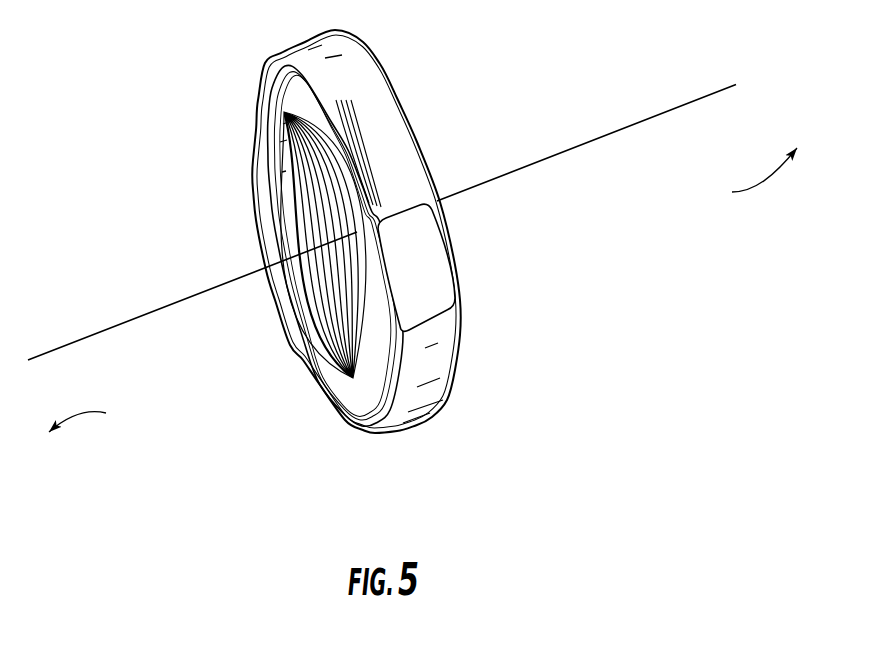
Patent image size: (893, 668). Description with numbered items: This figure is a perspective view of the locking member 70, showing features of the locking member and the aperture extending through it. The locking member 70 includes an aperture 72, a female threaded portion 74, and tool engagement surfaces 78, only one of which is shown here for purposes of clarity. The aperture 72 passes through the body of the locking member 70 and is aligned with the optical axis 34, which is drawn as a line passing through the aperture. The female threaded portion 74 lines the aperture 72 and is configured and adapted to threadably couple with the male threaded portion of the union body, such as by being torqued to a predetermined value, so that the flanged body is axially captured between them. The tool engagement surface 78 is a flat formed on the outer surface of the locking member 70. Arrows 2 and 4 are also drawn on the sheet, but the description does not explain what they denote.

The first direction arrow 2 is at (756, 179).
The second direction arrow 4 is at (84, 419).
The optical axis 34 is at (670, 112).
The locking member 70 is at (359, 291).
The aperture 72 is at (333, 278).
The female threaded portion 74 is at (303, 193).
The tool engagement surface 78 is at (437, 260).